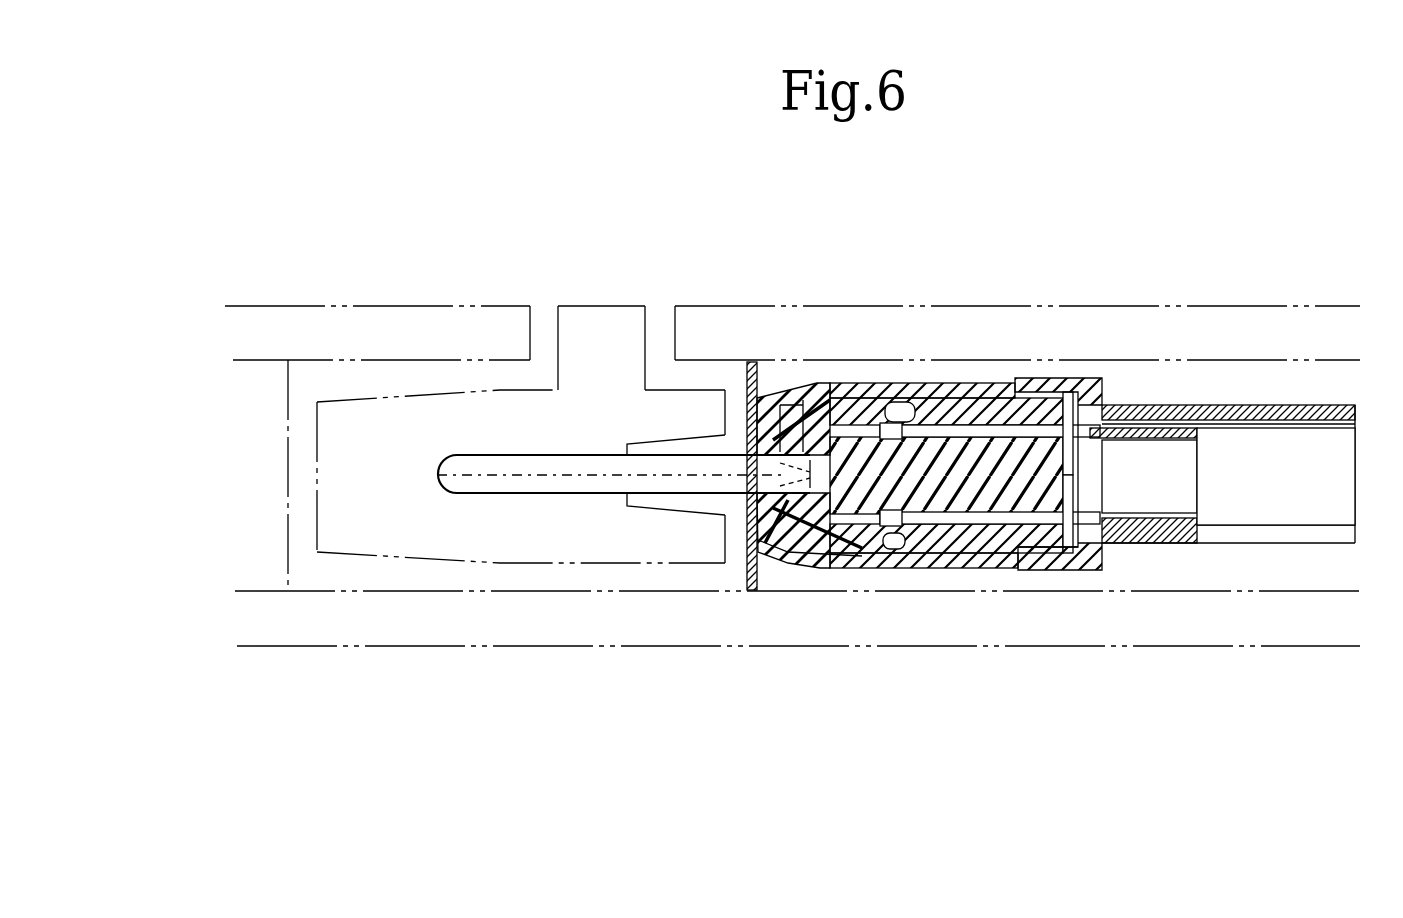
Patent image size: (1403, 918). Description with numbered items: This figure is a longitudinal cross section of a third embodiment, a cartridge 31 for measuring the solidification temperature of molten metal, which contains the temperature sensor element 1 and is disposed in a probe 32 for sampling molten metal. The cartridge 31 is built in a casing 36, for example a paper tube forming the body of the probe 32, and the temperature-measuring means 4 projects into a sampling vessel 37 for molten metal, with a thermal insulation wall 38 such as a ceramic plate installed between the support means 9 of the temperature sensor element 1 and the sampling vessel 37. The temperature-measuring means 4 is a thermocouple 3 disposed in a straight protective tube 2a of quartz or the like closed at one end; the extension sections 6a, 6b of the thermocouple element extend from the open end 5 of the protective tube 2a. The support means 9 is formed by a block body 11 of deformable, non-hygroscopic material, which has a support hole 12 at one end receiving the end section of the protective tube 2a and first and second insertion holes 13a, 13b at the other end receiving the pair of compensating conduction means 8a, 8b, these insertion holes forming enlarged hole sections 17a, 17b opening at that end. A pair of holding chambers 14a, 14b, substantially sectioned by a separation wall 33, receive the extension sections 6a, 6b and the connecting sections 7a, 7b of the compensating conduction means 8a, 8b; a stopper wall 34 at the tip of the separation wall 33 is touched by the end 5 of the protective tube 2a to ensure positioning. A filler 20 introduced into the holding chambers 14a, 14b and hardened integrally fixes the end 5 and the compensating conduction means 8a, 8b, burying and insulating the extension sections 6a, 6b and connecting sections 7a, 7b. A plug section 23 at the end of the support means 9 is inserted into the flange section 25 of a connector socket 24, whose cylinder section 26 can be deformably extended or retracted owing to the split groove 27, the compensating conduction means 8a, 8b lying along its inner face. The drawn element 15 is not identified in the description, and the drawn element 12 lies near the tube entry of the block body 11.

The temperature sensor element 1 is at (582, 472).
The protective tube 2a is at (541, 496).
The thermocouple 3 is at (537, 474).
The temperature-measuring means 4 is at (475, 447).
The end of the protective tube 5 is at (812, 430).
The extension section 6a is at (857, 395).
The extension section 6b is at (838, 556).
The connecting section 7a is at (912, 410).
The connecting section 7b is at (894, 548).
The compensating conduction means 8a is at (1285, 420).
The compensating conduction means 8b is at (1180, 519).
The support means 9 is at (946, 590).
The block body 11 is at (946, 475).
The support hole 12 is at (745, 488).
The first insertion hole 13a is at (993, 420).
The second insertion hole 13b is at (1010, 553).
The first holding chamber 14a is at (896, 424).
The second holding chamber 14b is at (880, 527).
The upper flange 15 is at (725, 433).
The enlarged hole section 17a is at (1068, 393).
The enlarged hole section 17b is at (1065, 554).
The filler 20 is at (800, 420).
The plug section 23 is at (1096, 480).
The connector socket 24 is at (1156, 404).
The flange section 25 is at (1058, 553).
The cylinder section 26 is at (1222, 404).
The split groove 27 is at (1299, 530).
The cartridge 31 is at (1112, 385).
The probe 32 is at (445, 300).
The separation wall 33 is at (832, 394).
The stopper wall 34 is at (763, 556).
The casing 36 is at (1185, 650).
The sampling vessel 37 is at (284, 471).
The thermal insulation wall 38 is at (748, 390).